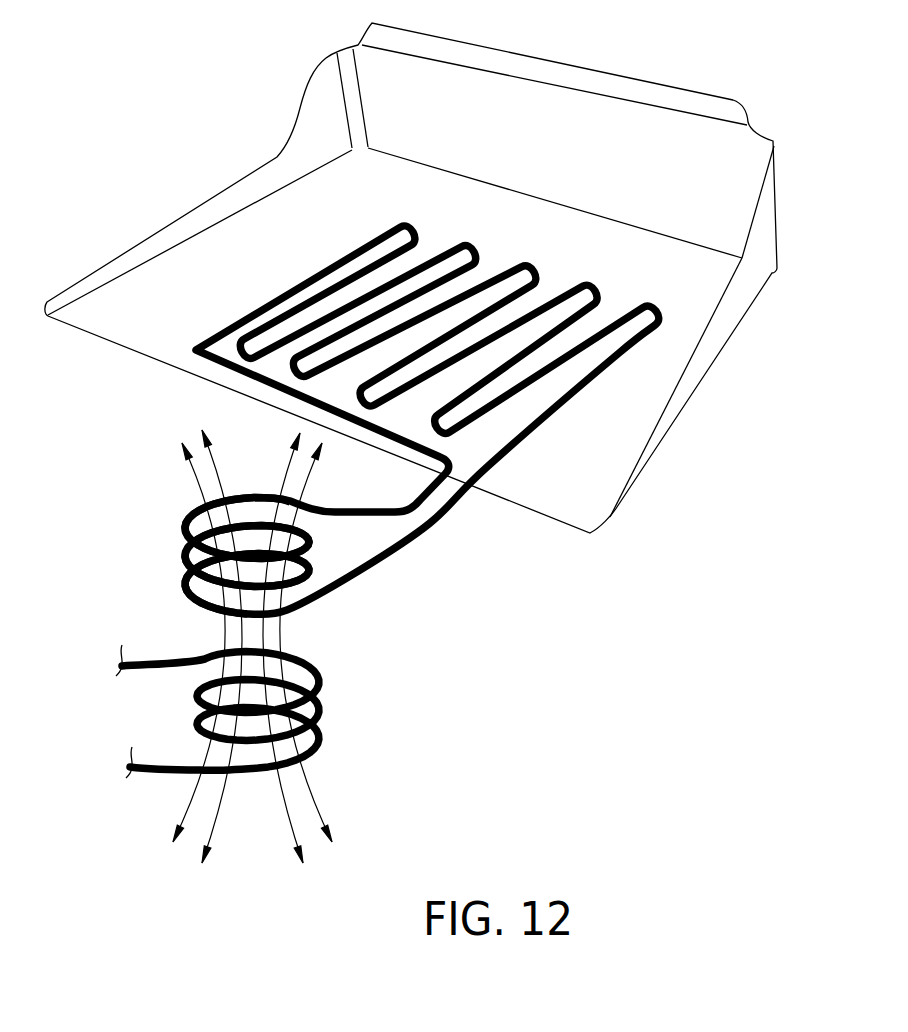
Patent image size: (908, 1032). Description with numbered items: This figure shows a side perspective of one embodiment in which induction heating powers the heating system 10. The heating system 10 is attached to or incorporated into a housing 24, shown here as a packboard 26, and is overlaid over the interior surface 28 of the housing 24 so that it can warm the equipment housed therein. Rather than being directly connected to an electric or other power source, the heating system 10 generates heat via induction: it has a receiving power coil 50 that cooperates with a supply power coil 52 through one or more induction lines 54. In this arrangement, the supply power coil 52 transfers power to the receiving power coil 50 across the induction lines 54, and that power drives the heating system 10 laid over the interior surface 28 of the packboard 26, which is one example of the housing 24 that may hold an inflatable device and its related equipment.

The heating system 10 is at (618, 352).
The housing 24 is at (505, 53).
The packboard 26 is at (528, 137).
The interior surface 28 is at (712, 192).
The receiving power coil 50 is at (175, 562).
The supply power coil 52 is at (332, 711).
The induction lines 54 is at (177, 788).